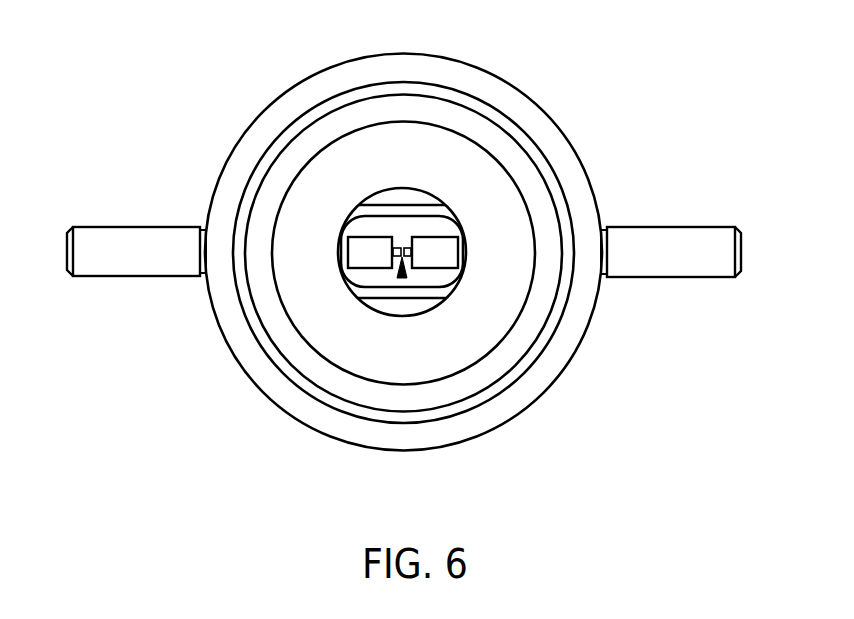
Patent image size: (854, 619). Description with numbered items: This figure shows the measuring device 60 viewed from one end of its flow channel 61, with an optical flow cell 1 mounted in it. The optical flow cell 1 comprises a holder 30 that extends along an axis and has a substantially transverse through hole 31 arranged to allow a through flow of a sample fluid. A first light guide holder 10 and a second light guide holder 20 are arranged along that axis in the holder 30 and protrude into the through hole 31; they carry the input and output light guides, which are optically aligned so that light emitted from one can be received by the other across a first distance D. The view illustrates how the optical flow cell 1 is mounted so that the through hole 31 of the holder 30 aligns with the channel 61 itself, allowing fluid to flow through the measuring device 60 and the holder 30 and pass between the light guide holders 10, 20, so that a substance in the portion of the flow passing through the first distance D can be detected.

The optical flow cell 1 is at (752, 207).
The first light guide holder 10 is at (682, 258).
The second light guide holder 20 is at (140, 252).
The holder 30 is at (380, 212).
The through hole 31 is at (378, 230).
The measuring device 60 is at (602, 89).
The flow channel 61 is at (407, 202).
The first distance D is at (402, 276).